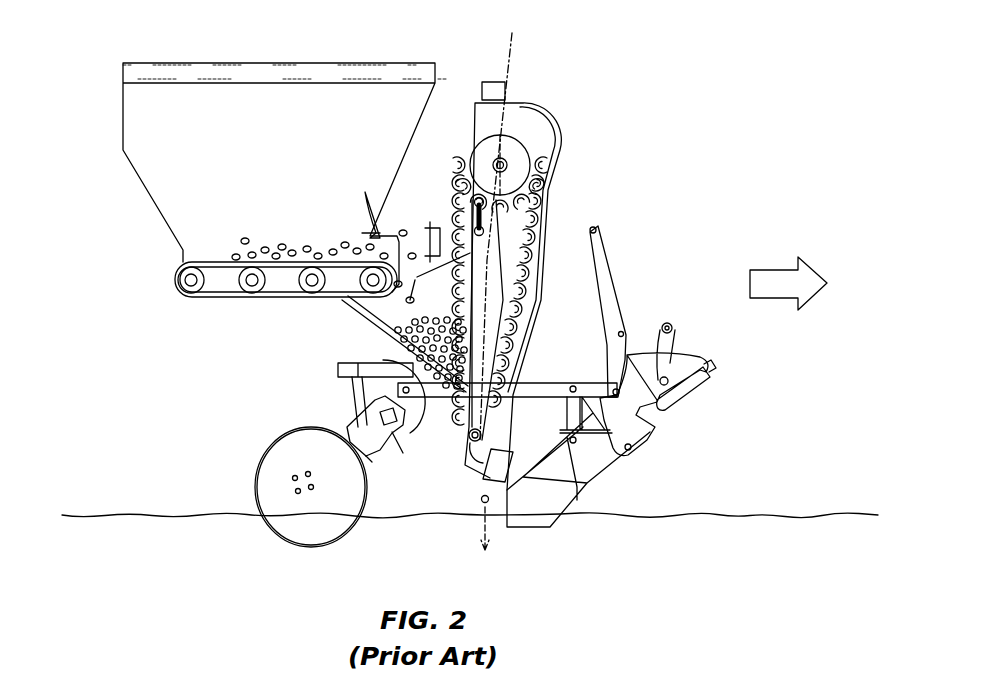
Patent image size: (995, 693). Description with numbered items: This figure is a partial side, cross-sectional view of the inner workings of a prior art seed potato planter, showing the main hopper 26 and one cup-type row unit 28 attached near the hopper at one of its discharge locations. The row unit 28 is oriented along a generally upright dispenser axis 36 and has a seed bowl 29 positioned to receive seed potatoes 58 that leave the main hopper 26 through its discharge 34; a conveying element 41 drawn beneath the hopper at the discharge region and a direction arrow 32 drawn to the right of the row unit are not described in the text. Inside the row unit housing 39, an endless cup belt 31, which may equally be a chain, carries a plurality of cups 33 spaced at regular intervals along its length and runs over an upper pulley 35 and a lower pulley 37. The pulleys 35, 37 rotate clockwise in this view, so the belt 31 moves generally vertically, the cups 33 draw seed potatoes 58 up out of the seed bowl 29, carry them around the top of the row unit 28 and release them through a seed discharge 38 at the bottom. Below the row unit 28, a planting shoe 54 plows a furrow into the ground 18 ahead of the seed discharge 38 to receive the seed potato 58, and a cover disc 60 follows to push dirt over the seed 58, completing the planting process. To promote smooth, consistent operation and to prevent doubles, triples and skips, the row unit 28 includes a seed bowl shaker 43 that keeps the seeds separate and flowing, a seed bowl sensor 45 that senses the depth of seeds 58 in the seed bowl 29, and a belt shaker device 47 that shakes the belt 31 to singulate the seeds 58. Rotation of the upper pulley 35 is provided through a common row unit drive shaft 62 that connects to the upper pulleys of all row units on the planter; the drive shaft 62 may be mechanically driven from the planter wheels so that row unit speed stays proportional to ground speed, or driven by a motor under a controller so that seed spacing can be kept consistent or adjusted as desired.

The ground surface 18 is at (772, 512).
The main hopper 26 is at (123, 110).
The row unit 28 is at (593, 66).
The seed bowl 29 is at (365, 305).
The cup belt 31 is at (470, 277).
The direction of travel 32 is at (778, 282).
The cups 33 is at (450, 187).
The discharge 34 is at (364, 202).
The upper pulley 35 is at (515, 160).
The dispenser axis 36 is at (508, 52).
The lower pulley 37 is at (462, 448).
The seed discharge 38 is at (465, 484).
The row unit housing 39 is at (518, 100).
The conveyor 41 is at (234, 266).
The seed bowl shaker 43 is at (353, 393).
The seed bowl sensor 45 is at (418, 277).
The belt shaker device 47 is at (485, 223).
The planting shoe 54 is at (588, 470).
The seed potatoes 58 is at (312, 245).
The cover disc 60 is at (278, 463).
The row unit drive shaft 62 is at (525, 175).